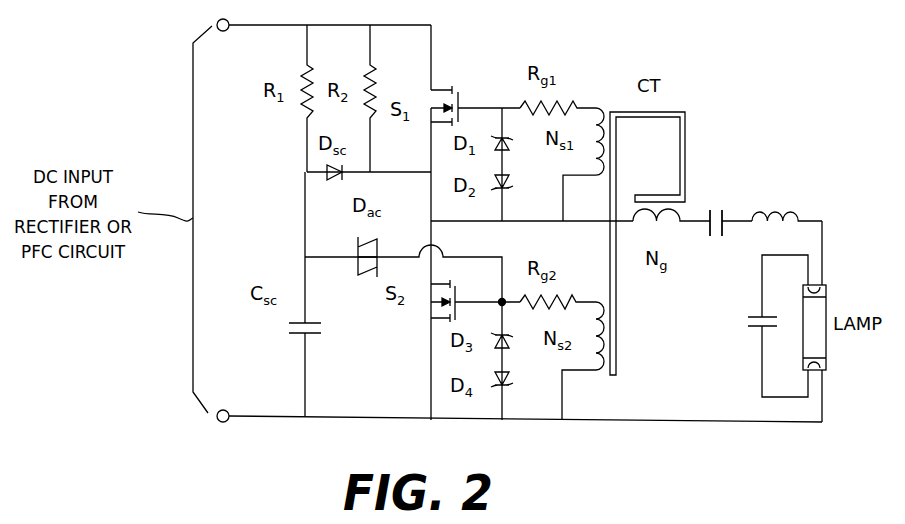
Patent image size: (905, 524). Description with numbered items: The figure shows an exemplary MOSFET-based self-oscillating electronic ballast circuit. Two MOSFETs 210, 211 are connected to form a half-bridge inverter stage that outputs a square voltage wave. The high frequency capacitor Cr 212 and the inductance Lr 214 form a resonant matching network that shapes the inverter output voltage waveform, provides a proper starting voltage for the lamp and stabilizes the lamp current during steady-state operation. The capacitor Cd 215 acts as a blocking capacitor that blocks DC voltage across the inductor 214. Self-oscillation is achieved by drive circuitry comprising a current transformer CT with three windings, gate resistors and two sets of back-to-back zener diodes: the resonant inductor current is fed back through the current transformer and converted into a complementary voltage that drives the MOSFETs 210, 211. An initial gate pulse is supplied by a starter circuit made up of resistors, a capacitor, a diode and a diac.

The MOSFET 210 is at (440, 88).
The MOSFET 211 is at (455, 292).
The high frequency capacitor Cr 212 is at (748, 328).
The inductance Lr 214 is at (795, 215).
The capacitor Cd 215 is at (712, 231).